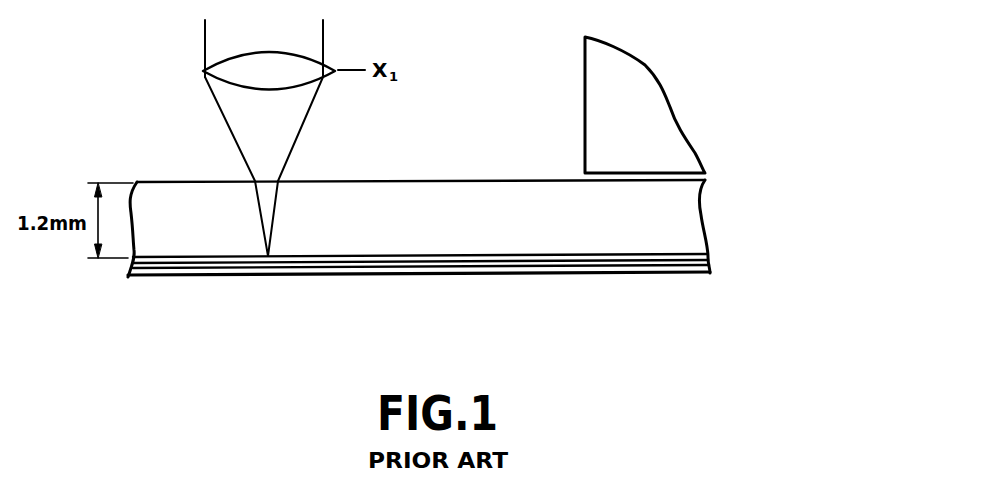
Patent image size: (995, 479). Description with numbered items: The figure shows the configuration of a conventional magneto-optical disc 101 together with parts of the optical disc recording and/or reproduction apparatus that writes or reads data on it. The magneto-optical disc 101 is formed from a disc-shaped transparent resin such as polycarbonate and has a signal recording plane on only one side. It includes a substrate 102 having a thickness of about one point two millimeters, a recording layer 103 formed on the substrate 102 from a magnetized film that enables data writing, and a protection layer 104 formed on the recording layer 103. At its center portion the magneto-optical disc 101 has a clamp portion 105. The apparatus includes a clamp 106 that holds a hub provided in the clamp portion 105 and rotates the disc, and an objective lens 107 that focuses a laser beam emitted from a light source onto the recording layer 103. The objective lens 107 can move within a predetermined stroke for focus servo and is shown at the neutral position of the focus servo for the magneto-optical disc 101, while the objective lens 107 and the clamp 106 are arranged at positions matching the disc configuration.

The magneto-optical disc 101 is at (498, 235).
The substrate 102 is at (690, 219).
The recording layer 103 is at (703, 258).
The protection layer 104 is at (453, 285).
The clamp portion 105 is at (645, 212).
The clamp 106 is at (603, 132).
The objective lens 107 is at (205, 73).